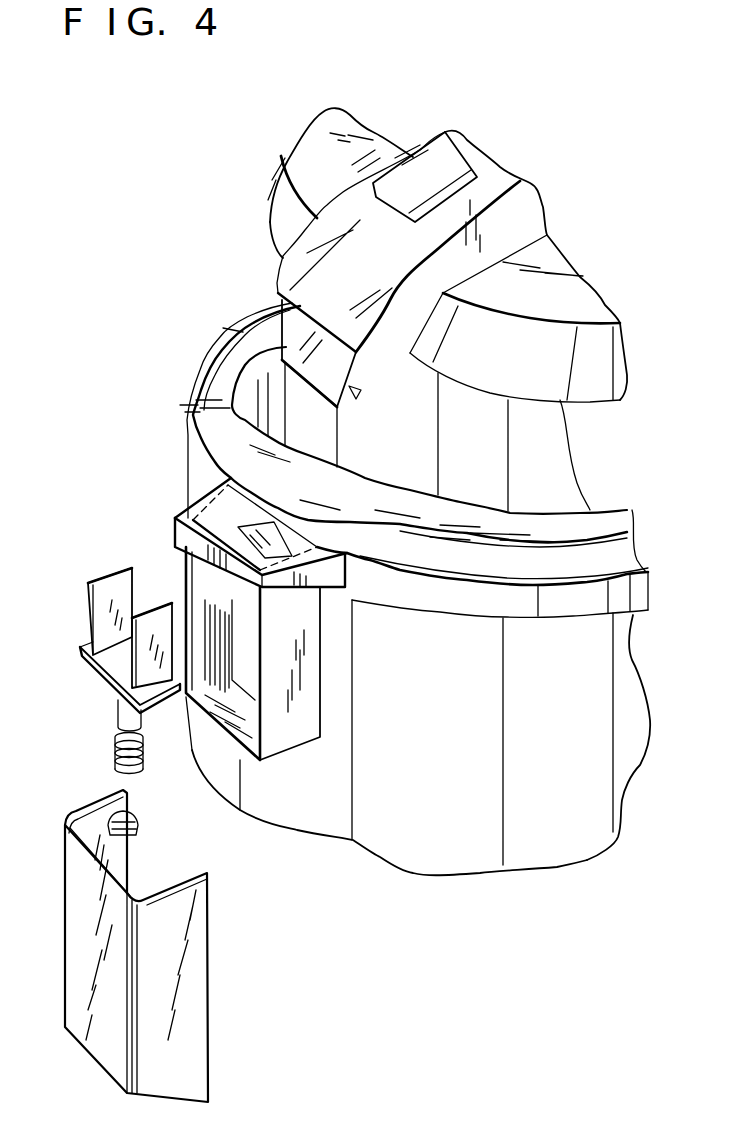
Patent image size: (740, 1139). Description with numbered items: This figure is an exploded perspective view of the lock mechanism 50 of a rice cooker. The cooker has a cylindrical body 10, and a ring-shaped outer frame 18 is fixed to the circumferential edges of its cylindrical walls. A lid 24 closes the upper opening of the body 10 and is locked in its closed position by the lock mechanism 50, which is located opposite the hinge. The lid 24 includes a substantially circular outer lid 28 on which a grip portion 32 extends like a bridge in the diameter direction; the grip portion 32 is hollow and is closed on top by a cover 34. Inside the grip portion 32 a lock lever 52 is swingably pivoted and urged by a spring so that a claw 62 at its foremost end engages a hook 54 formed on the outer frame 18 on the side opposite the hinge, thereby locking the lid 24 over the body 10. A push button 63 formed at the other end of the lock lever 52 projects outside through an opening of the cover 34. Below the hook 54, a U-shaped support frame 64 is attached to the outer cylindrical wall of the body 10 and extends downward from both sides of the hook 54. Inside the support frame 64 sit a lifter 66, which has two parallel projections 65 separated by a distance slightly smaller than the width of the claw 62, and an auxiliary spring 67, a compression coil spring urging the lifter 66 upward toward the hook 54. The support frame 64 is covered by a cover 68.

The body 10 is at (430, 873).
The outer frame 18 is at (187, 432).
The lid 24 is at (253, 167).
The outer lid 28 is at (323, 121).
The grip portion 32 is at (414, 133).
The cover 34 is at (342, 208).
The lock mechanism 50 is at (168, 348).
The lock lever 52 is at (337, 371).
The hook 54 is at (268, 557).
The claw 62 is at (348, 408).
The push button 63 is at (396, 204).
The support frame 64 is at (295, 740).
The projections 65 is at (92, 580).
The lifter 66 is at (103, 678).
The auxiliary spring 67 is at (113, 748).
The cover 68 is at (70, 937).